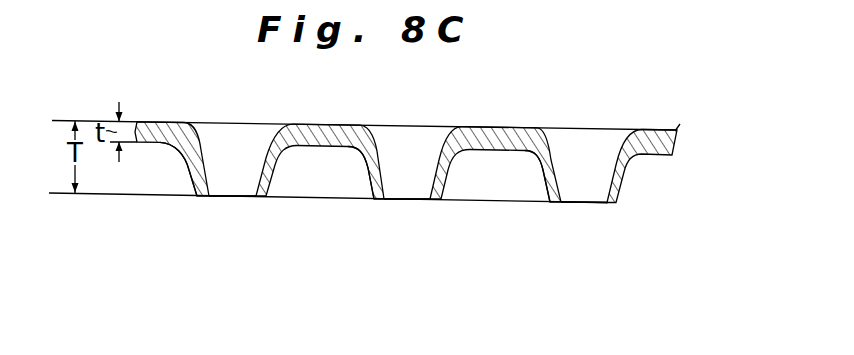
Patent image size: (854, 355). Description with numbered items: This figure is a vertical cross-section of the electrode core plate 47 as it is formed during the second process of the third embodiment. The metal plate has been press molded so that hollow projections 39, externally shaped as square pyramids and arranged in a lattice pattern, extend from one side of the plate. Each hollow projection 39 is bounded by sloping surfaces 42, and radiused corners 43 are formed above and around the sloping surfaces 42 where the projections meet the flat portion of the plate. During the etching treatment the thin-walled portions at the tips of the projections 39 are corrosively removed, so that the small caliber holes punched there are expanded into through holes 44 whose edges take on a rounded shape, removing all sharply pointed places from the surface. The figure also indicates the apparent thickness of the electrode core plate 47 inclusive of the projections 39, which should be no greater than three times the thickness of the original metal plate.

The hollow projection 39 is at (185, 172).
The sloping surface 42 is at (280, 167).
The radiused corner 43 is at (188, 122).
The through hole 44 is at (225, 197).
The electrode core plate 47 is at (530, 121).